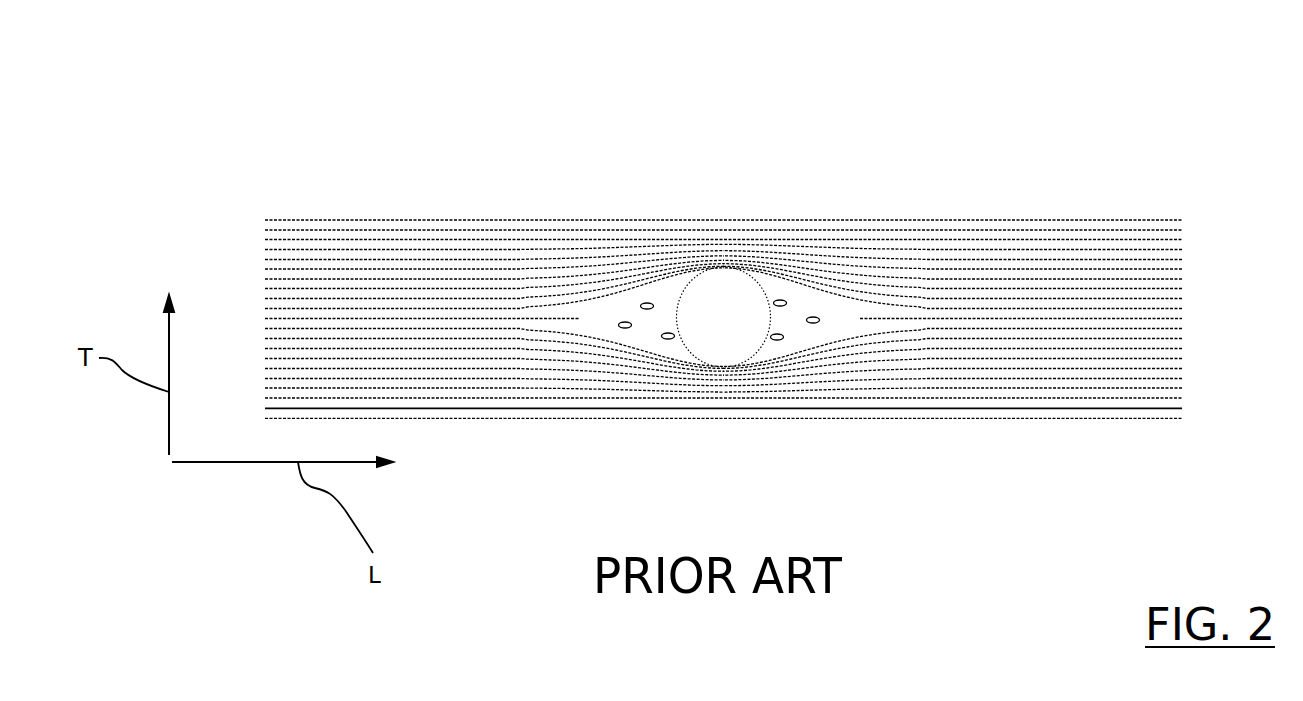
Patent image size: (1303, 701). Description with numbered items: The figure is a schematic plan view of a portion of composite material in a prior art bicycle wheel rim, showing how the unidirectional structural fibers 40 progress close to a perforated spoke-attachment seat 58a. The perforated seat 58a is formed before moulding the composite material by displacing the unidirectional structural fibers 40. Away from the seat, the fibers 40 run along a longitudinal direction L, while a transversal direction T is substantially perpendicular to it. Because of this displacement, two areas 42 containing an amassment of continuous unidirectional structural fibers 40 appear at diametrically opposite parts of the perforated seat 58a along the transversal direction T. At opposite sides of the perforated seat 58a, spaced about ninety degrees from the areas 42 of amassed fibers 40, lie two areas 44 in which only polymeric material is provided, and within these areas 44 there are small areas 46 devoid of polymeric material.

The unidirectional structural fibers 40 is at (1075, 257).
The areas comprising an amassment of fibers 42 is at (723, 251).
The areas in which only polymeric material is provided 44 is at (645, 331).
The small areas devoid of polymeric material 46 is at (644, 303).
The perforated spoke-attachment seat 58a is at (728, 295).